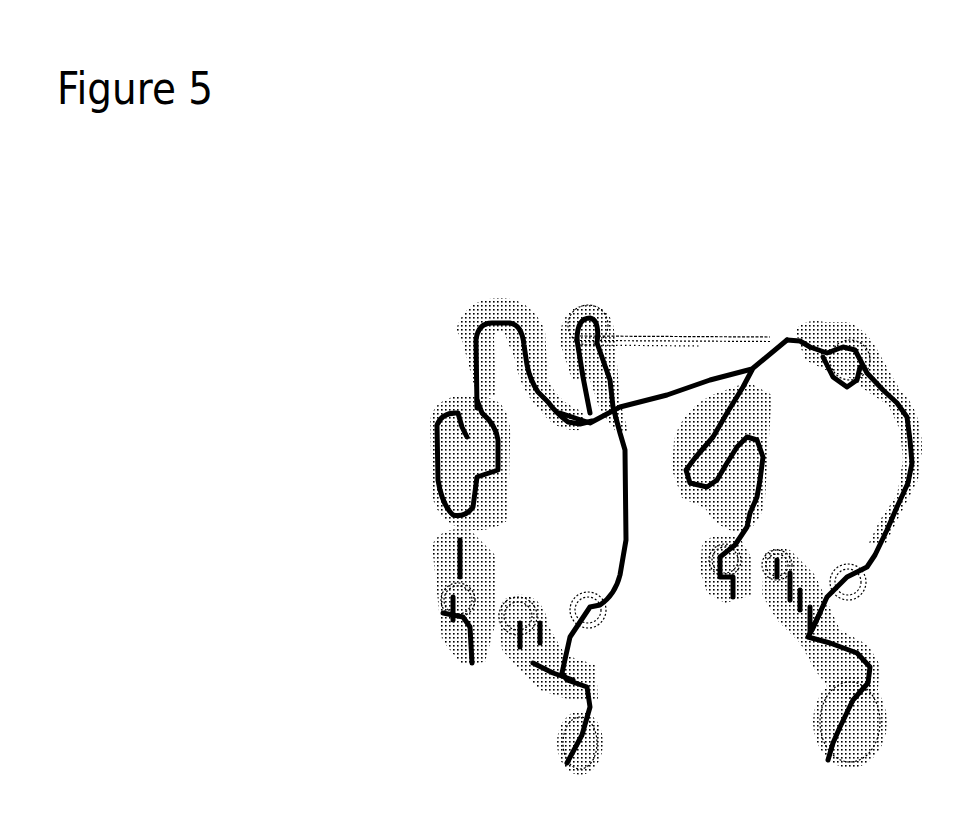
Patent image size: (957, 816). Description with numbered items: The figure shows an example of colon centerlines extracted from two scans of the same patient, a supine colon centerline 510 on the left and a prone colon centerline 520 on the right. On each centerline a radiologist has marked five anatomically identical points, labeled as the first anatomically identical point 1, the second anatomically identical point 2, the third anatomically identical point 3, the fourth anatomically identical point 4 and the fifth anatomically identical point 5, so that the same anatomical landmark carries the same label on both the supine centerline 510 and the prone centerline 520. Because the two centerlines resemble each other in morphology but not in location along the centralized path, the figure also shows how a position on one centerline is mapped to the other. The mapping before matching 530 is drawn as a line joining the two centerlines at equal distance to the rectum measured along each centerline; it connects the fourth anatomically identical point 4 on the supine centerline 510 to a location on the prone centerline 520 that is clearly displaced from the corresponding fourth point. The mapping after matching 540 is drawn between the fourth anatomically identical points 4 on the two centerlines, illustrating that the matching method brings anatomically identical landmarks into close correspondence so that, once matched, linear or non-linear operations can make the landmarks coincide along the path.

The supine colon centerline 510 is at (480, 706).
The prone colon centerline 520 is at (740, 696).
The mapping before matching 530 is at (719, 375).
The mapping after matching 540 is at (643, 340).
The first anatomically identical point 1 is at (734, 727).
The second anatomically identical point 2 is at (646, 592).
The third anatomically identical point 3 is at (731, 614).
The fourth anatomically identical point 4 is at (724, 329).
The fifth anatomically identical point 5 is at (576, 585).